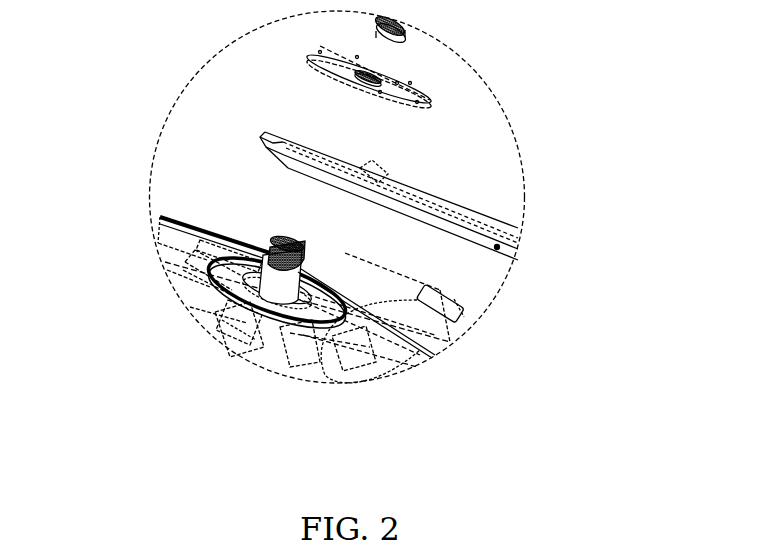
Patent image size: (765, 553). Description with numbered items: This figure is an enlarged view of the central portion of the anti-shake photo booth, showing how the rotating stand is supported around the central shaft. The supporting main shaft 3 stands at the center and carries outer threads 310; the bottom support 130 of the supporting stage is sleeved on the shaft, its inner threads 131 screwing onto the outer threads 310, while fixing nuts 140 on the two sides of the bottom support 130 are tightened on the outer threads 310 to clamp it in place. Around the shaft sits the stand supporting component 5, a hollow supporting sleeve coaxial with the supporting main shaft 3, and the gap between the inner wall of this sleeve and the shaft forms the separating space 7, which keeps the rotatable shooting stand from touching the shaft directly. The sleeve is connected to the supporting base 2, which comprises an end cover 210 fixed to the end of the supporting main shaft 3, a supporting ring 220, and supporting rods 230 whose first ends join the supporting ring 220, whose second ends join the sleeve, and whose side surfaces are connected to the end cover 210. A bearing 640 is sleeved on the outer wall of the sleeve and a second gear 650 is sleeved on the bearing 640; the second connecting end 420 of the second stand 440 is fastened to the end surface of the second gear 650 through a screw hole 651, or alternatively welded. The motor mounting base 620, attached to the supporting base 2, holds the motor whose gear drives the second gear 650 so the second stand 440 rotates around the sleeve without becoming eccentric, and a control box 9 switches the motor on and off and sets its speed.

The supporting base 2 is at (385, 432).
The supporting main shaft 3 is at (200, 225).
The stand supporting component 5 is at (237, 348).
The separating space 7 is at (300, 278).
The control box 9 is at (463, 305).
The bottom support 130 is at (327, 60).
The inner threads 131 is at (383, 78).
The fixing nuts 140 is at (376, 22).
The end cover 210 is at (243, 350).
The supporting ring 220 is at (353, 370).
The supporting rods 230 is at (330, 365).
The outer threads 310 is at (257, 227).
The second connecting end 420 is at (295, 181).
The second stand 440 is at (446, 190).
The motor mounting base 620 is at (450, 342).
The bearing 640 is at (210, 323).
The second gear 650 is at (210, 254).
The screw hole 651 is at (213, 279).